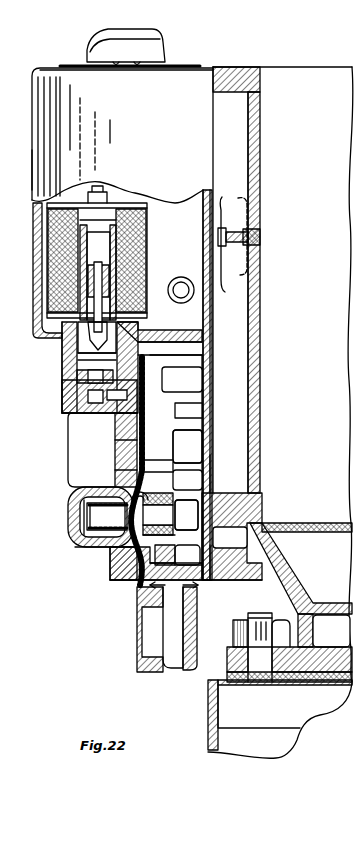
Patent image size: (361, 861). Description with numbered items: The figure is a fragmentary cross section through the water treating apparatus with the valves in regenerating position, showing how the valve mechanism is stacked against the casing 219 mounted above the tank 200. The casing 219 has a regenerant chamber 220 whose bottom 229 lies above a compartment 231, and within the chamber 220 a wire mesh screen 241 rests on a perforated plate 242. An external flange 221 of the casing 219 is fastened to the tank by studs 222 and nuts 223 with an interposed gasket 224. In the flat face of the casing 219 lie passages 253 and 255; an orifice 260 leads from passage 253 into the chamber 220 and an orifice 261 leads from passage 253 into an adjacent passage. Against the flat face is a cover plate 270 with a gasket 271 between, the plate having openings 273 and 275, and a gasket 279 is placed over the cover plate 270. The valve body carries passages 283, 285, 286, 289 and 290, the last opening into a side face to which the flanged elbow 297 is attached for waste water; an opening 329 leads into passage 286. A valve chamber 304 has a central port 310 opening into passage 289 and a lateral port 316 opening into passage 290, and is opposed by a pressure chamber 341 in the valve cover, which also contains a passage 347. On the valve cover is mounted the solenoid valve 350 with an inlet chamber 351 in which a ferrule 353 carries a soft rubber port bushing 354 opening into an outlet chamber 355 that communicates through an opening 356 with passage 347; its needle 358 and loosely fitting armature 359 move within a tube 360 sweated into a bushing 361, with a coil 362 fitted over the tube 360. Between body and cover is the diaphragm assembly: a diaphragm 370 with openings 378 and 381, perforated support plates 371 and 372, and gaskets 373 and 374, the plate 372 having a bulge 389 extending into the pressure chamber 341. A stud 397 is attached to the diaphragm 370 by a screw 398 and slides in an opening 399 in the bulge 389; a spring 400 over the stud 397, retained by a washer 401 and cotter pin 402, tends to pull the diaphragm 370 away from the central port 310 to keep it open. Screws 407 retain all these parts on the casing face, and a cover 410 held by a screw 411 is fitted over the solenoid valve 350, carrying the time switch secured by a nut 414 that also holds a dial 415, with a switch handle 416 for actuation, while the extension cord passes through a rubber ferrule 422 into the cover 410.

The tank 200 is at (216, 741).
The casing 219 is at (240, 66).
The regenerant chamber 220 is at (324, 295).
The external flange 221 is at (227, 655).
The stud 222 is at (256, 613).
The nut 223 is at (232, 636).
The gasket 224 is at (227, 678).
The bottom 229 is at (325, 603).
The compartment 231 is at (324, 630).
The wire mesh screen 241 is at (310, 524).
The perforated plate 242 is at (290, 533).
The passage 253 is at (236, 280).
The passage 255 is at (230, 537).
The orifice 260 is at (262, 237).
The orifice 261 is at (232, 251).
The cover plate 270 is at (207, 581).
The gasket 271 is at (211, 378).
The opening 273 is at (211, 472).
The opening 275 is at (211, 557).
The gasket 279 is at (200, 348).
The passage 283 is at (182, 379).
The passage 285 is at (189, 410).
The passage 286 is at (187, 446).
The passage 289 is at (188, 515).
The passage 290 is at (185, 563).
The flanged elbow 297 is at (150, 675).
The valve chamber 304 is at (187, 480).
The central port 310 is at (158, 514).
The lateral port 316 is at (188, 515).
The opening 329 is at (158, 465).
The pressure chamber 341 is at (120, 500).
The passage 347 is at (132, 415).
The solenoid valve 350 is at (147, 228).
The inlet chamber 351 is at (75, 367).
The ferrule 353 is at (80, 378).
The port bushing 354 is at (92, 391).
The outlet chamber 355 is at (90, 401).
The opening 356 is at (120, 394).
The needle 358 is at (36, 335).
The armature 359 is at (33, 199).
The tube 360 is at (62, 352).
The bushing 361 is at (138, 326).
The coil 362 is at (140, 250).
The diaphragm 370 is at (200, 582).
The perforated support plate 371 is at (150, 560).
The perforated support plate 372 is at (170, 580).
The gasket 373 is at (187, 446).
The gasket 374 is at (133, 427).
The opening 378 is at (140, 470).
The opening 381 is at (120, 540).
The bulge 389 is at (128, 488).
The stud 397 is at (88, 520).
The screw 398 is at (130, 545).
The opening 399 is at (115, 530).
The spring 400 is at (105, 522).
The washer 401 is at (90, 520).
The cotter pin 402 is at (88, 507).
The screw 407 is at (140, 552).
The cover 410 is at (33, 82).
The screw 411 is at (32, 165).
The nut 414 is at (180, 64).
The dial 415 is at (200, 61).
The switch handle 416 is at (87, 50).
The rubber ferrule 422 is at (181, 277).